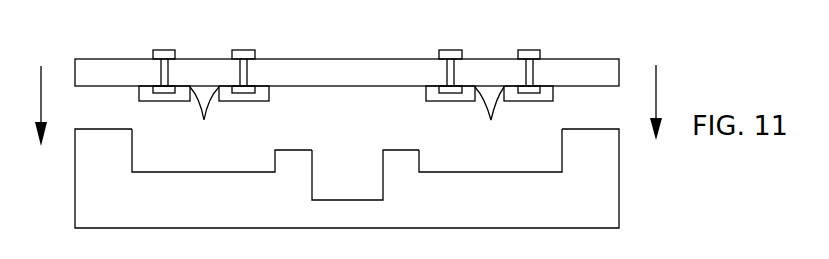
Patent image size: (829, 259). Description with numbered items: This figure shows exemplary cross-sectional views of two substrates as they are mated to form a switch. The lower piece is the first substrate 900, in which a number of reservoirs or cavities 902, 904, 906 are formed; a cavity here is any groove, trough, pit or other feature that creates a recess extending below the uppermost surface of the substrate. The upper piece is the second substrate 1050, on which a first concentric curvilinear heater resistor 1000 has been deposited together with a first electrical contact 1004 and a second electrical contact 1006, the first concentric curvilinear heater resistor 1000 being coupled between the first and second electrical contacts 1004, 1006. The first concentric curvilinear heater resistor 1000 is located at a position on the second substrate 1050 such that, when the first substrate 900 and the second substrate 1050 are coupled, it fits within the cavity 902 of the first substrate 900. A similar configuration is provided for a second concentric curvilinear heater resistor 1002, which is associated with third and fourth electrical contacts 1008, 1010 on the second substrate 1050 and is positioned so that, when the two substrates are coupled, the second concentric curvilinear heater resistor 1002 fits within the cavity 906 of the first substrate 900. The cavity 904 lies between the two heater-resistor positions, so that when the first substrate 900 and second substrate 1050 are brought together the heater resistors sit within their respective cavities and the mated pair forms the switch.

The first substrate 900 is at (619, 213).
The cavity 902 is at (248, 156).
The cavity 904 is at (347, 169).
The cavity 906 is at (533, 156).
The first concentric curvilinear heater resistor 1000 is at (206, 117).
The second concentric curvilinear heater resistor 1002 is at (492, 117).
The first electrical contact 1004 is at (163, 50).
The second electrical contact 1006 is at (242, 50).
The third electrical contact 1008 is at (449, 50).
The fourth electrical contact 1010 is at (528, 50).
The second substrate 1050 is at (605, 58).